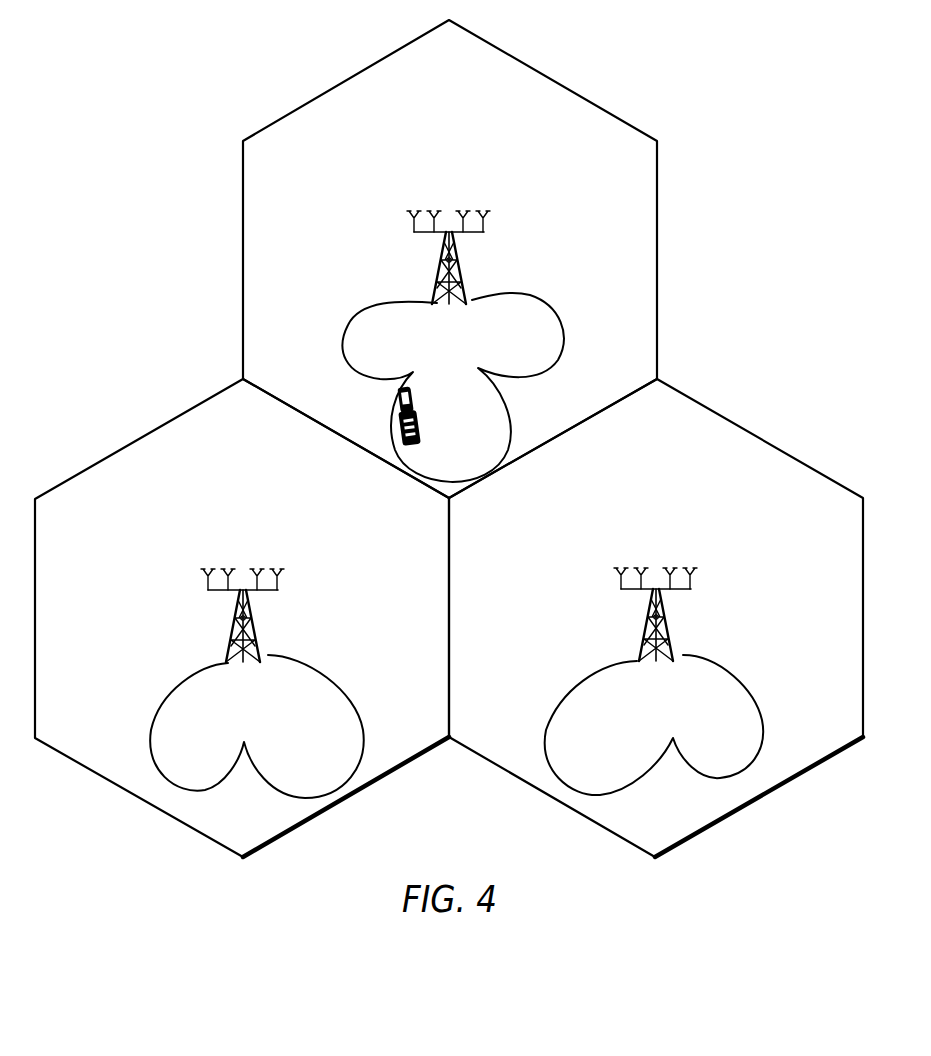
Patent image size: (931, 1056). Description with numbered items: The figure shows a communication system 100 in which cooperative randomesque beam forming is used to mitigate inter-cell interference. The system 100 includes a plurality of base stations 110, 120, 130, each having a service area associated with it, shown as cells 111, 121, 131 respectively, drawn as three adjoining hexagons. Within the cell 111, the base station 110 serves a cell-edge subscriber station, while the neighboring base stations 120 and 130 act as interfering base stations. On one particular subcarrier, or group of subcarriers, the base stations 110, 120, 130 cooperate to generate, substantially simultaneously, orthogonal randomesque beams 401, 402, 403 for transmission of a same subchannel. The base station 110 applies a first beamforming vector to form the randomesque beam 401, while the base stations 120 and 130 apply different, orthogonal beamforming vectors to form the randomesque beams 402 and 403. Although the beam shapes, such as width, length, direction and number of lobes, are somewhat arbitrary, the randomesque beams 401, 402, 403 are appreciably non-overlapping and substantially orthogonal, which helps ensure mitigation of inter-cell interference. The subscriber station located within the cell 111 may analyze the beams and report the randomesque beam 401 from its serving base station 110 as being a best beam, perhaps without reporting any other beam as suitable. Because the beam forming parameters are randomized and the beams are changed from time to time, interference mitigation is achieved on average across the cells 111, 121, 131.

The communication system 100 is at (643, 81).
The cell 111 is at (657, 222).
The cell 121 is at (330, 806).
The cell 131 is at (738, 810).
The base station 110 is at (460, 266).
The base station 120 is at (252, 628).
The base station 130 is at (666, 622).
The randomesque beam 401 is at (512, 408).
The randomesque beam 402 is at (160, 680).
The randomesque beam 403 is at (572, 685).